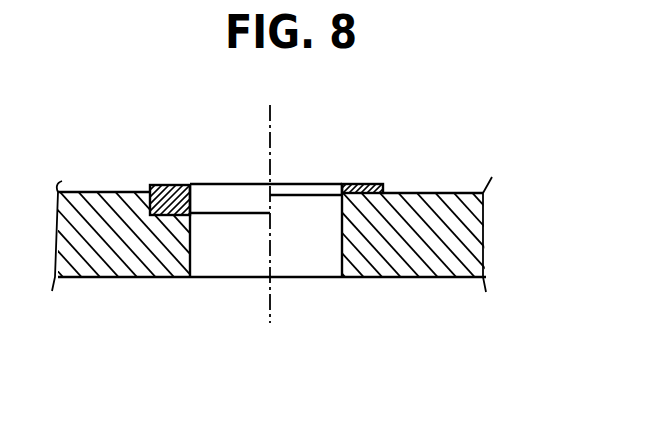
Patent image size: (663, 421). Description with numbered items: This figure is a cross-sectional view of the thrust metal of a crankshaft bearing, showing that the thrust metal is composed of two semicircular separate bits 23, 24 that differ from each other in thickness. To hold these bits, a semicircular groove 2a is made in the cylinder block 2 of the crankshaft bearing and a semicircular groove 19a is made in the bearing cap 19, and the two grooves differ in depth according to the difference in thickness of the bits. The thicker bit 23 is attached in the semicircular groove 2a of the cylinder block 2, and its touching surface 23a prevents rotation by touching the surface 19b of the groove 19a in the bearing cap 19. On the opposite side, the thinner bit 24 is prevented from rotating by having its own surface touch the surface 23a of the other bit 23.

The cylinder block 2 is at (75, 194).
The semicircular groove 2a is at (180, 187).
The semicircular separate bit 23 is at (162, 185).
The touching surface 23a is at (272, 190).
The semicircular separate bit 24 is at (375, 185).
The bearing cap 19 is at (460, 192).
The semicircular groove 19a is at (372, 195).
The surface of groove 19b is at (266, 212).